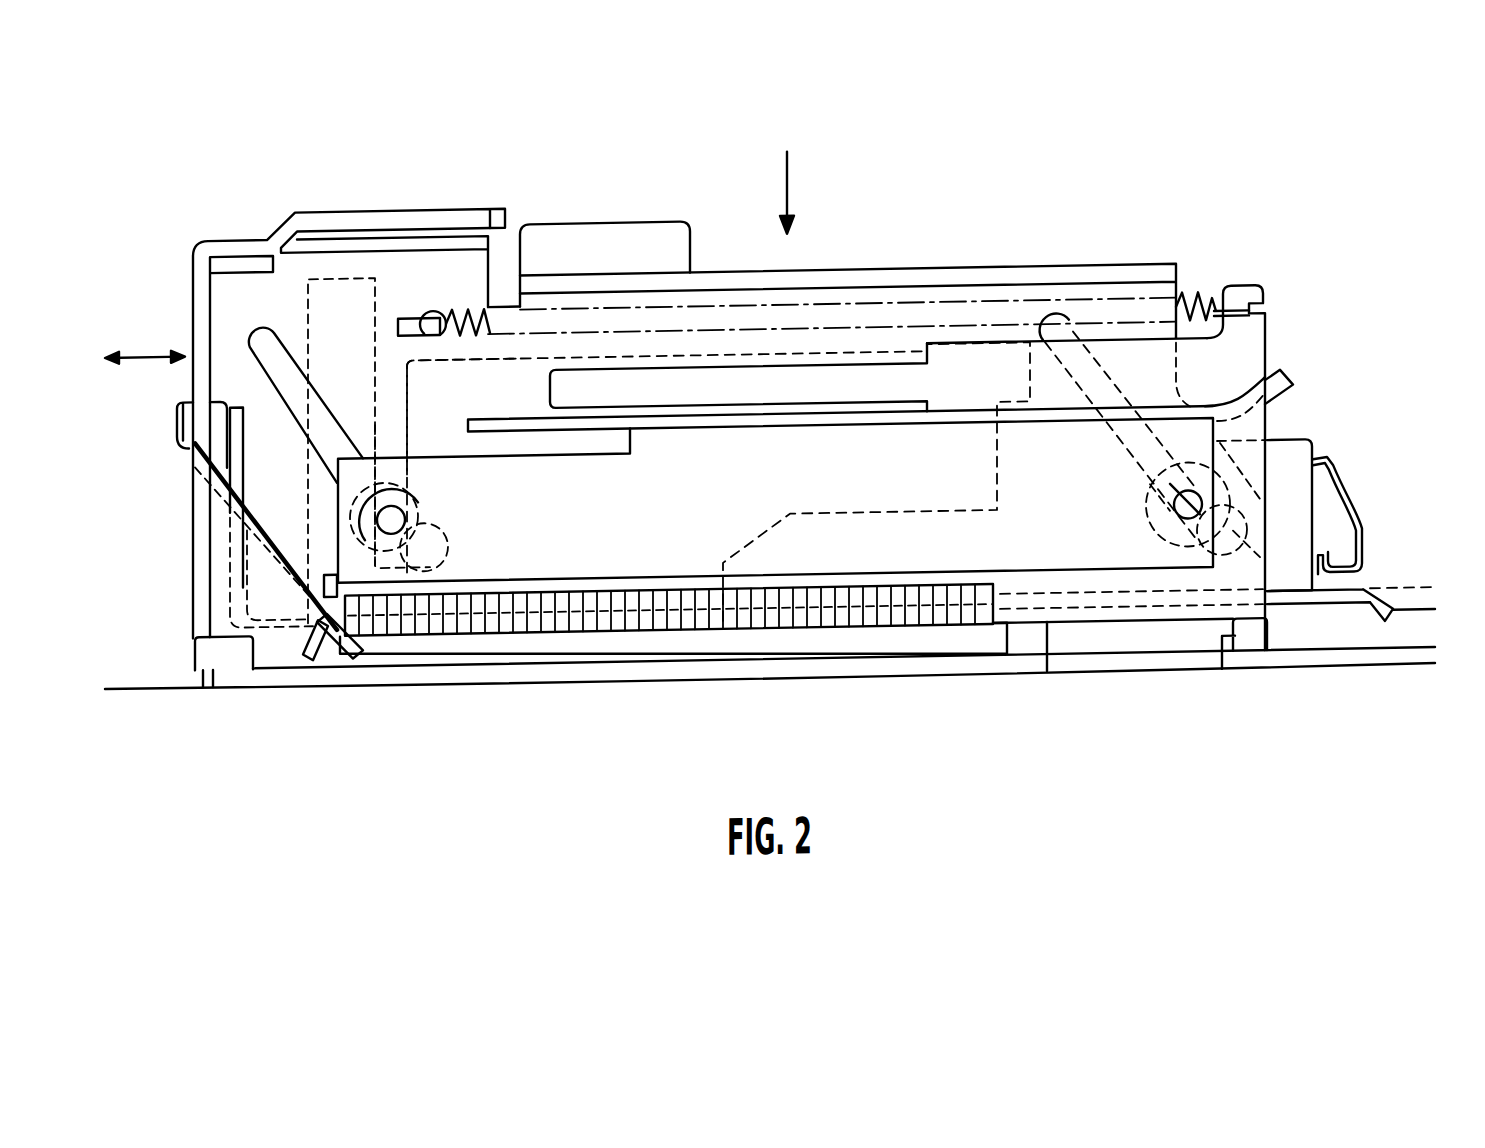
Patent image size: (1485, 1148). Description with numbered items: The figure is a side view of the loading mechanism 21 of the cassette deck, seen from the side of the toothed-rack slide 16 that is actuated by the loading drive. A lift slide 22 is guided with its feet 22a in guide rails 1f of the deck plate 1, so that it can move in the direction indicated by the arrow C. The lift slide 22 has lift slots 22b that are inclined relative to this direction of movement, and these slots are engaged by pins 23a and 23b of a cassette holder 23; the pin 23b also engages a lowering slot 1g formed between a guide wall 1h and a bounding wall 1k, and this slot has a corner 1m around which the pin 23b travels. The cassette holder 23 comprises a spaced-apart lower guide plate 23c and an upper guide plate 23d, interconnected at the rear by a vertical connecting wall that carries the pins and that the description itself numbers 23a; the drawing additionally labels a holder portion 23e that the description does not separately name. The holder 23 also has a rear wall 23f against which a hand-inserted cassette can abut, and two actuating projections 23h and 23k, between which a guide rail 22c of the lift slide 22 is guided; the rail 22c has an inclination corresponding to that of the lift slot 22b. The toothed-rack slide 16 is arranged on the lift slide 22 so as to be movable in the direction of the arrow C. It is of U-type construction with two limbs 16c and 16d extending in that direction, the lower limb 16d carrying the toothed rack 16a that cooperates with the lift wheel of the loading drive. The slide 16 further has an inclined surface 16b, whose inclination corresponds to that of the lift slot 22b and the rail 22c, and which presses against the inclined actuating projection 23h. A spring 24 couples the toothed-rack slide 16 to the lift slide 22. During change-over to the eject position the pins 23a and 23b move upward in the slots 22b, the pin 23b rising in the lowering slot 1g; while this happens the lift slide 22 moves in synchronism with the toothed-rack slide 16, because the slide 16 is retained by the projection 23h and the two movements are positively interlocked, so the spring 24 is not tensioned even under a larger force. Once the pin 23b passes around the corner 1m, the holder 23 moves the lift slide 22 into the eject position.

The deck plate 1 is at (148, 712).
The guide rails 1f is at (748, 680).
The lowering slot 1g is at (392, 400).
The guide wall 1h is at (412, 368).
The bounding wall 1k is at (352, 302).
The corner 1m is at (407, 382).
The toothed-rack slide 16 is at (1055, 634).
The toothed rack 16a is at (632, 634).
The inclined surface 16b is at (268, 552).
The limb 16c is at (704, 402).
The lower limb 16d is at (1103, 602).
The loading mechanism 21 is at (789, 186).
The lift slide 22 is at (945, 283).
The feet 22a is at (221, 664).
The lift slots 22b is at (262, 344).
The guide rail 22c is at (359, 660).
The cassette holder 23 is at (1297, 472).
The pin 23a is at (1186, 528).
The pin 23b is at (392, 525).
The lower guide plate 23c is at (1356, 618).
The upper guide plate 23d is at (1047, 440).
The latch lever edge 23e is at (1132, 563).
The rear wall 23f is at (243, 457).
The actuating projection 23h is at (306, 660).
The actuating projection 23k is at (302, 610).
The spring 24 is at (1183, 322).
The arrow C is at (141, 358).